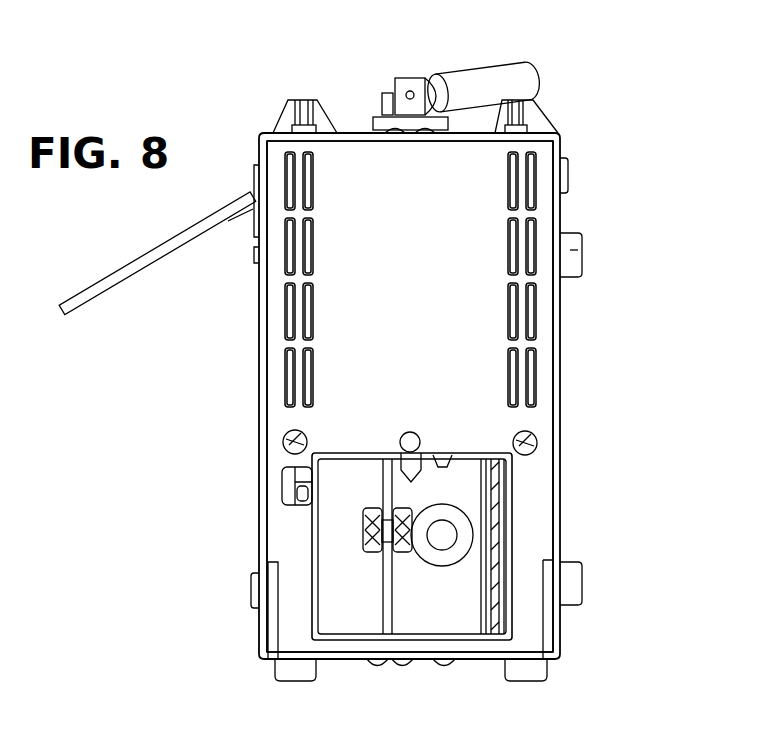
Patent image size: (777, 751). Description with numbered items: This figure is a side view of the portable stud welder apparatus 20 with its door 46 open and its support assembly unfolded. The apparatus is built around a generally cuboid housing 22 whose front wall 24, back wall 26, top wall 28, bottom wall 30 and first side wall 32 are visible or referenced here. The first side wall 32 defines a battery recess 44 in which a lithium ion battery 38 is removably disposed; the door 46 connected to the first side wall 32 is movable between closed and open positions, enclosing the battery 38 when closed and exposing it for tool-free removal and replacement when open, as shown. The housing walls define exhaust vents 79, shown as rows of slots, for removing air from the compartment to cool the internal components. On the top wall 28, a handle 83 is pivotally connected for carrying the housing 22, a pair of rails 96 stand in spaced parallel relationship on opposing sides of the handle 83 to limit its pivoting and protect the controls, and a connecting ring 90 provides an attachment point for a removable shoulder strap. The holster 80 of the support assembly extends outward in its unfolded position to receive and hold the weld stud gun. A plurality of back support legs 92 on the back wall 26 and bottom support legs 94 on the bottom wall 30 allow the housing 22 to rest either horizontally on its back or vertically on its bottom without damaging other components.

The portable stud welder apparatus 20 is at (680, 194).
The housing 22 is at (568, 145).
The front wall 24 is at (259, 470).
The back wall 26 is at (561, 455).
The top wall 28 is at (356, 131).
The bottom wall 30 is at (338, 660).
The first side wall 32 is at (473, 183).
The lithium ion battery 38 is at (467, 453).
The battery recess 44 is at (450, 453).
The door 46 is at (490, 562).
The exhaust vents 79 is at (287, 255).
The holster 80 is at (105, 292).
The handle 83 is at (487, 73).
The connecting rings 90 is at (388, 110).
The back support legs 92 is at (578, 250).
The bottom support legs 94 is at (298, 670).
The rails 96 is at (287, 120).